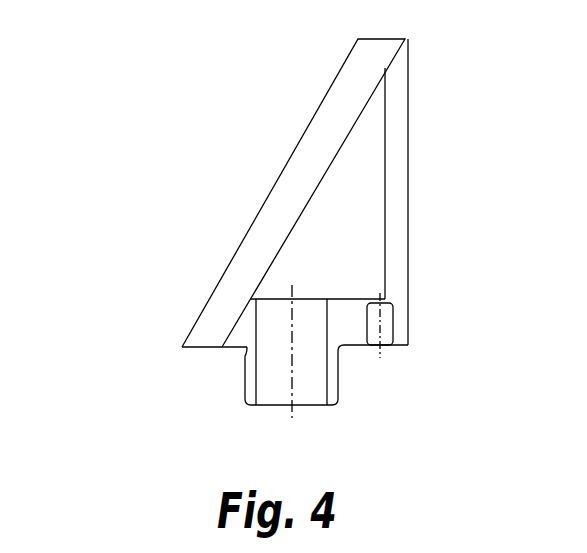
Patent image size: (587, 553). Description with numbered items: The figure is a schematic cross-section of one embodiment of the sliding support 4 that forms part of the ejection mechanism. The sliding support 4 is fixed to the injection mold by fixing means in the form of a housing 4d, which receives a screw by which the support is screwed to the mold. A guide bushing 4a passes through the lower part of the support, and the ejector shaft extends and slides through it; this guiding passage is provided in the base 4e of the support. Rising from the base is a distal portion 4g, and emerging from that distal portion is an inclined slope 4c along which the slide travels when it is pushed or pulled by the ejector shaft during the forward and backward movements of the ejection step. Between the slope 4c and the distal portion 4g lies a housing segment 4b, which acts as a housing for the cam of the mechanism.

The sliding support 4 is at (168, 237).
The guide bushing 4a is at (310, 383).
The housing segment 4b is at (355, 238).
The slope 4c is at (290, 153).
The housing 4d is at (383, 330).
The base 4e is at (237, 340).
The distal portion 4g is at (403, 138).